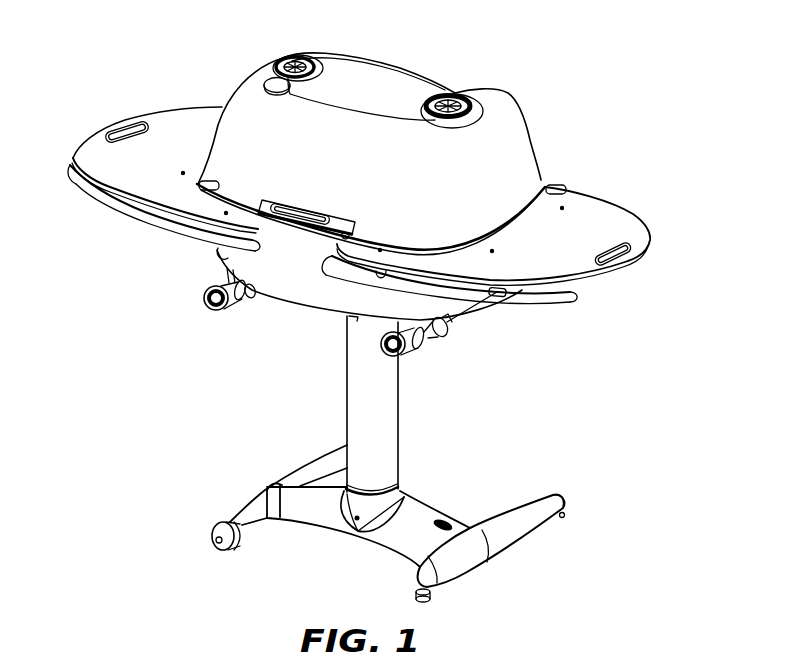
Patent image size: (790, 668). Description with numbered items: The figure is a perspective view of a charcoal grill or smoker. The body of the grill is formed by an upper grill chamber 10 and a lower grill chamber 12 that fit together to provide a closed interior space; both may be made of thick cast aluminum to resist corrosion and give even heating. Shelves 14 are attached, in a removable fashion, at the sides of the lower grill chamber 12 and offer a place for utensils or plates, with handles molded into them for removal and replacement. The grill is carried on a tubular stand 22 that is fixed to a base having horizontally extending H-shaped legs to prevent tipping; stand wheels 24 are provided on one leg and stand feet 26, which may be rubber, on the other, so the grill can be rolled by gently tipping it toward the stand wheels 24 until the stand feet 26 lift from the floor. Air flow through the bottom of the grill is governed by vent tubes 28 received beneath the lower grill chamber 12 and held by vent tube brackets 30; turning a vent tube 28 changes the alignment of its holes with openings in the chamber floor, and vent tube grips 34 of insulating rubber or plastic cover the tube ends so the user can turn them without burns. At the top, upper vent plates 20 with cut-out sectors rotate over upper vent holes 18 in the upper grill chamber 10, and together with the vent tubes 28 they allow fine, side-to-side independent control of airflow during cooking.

The upper grill chamber 10 is at (394, 63).
The lower grill chamber 12 is at (318, 308).
The shelves 14 is at (175, 112).
The upper vent holes 18 is at (465, 99).
The upper vent plates 20 is at (449, 99).
The tubular stand 22 is at (353, 407).
The stand wheels 24 is at (221, 541).
The stand feet 26 is at (431, 597).
The vent tubes 28 is at (413, 349).
The vent tube brackets 30 is at (444, 336).
The vent tube grips 34 is at (203, 302).